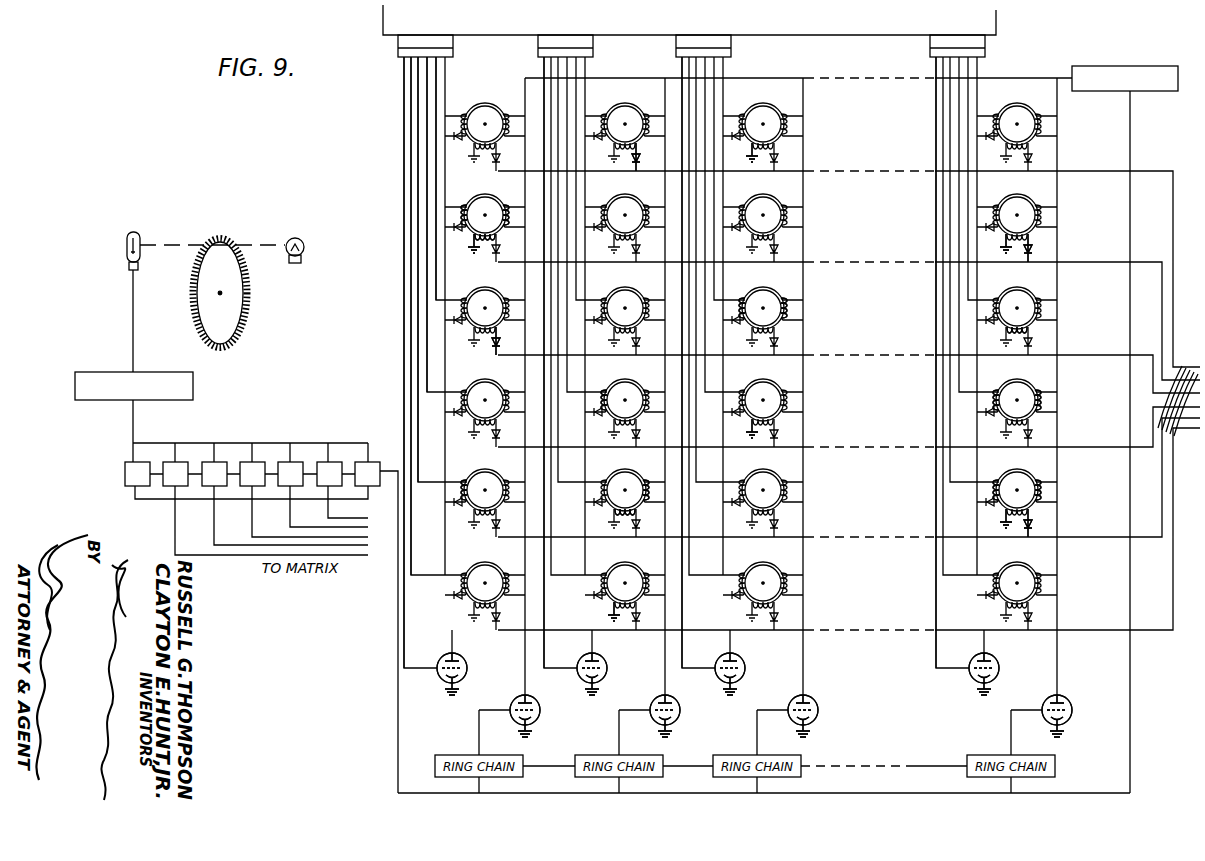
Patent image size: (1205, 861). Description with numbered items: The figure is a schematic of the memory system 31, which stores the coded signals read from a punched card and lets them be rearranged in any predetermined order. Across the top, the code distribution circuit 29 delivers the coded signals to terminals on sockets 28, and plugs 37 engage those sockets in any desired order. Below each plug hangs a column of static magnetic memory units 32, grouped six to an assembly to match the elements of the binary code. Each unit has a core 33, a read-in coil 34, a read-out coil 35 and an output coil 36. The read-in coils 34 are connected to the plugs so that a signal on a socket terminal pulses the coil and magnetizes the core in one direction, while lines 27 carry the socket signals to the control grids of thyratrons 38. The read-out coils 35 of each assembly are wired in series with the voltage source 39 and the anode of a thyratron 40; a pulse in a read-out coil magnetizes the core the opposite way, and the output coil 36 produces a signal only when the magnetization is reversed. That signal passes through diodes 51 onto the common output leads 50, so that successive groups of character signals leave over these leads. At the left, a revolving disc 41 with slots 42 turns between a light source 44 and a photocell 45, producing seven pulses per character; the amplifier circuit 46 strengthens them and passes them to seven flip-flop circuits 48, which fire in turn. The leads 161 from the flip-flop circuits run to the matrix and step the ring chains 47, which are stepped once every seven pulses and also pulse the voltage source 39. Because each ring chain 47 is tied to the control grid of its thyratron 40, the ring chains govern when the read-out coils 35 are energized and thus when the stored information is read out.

The lines 27 is at (404, 366).
The sockets 28 is at (453, 41).
The code distribution circuit 29 is at (689, 20).
The memory system 31 is at (398, 297).
The static magnetic memory units 32 is at (496, 103).
The core 33 is at (492, 188).
The read-in coil 34 is at (467, 205).
The read-out coil 35 is at (504, 205).
The output coil 36 is at (474, 238).
The plugs 37 is at (398, 54).
The thyratrons 38 is at (468, 664).
The voltage source 39 is at (1088, 66).
The thyratrons 40 is at (541, 708).
The revolving disc 41 is at (224, 306).
The slots 42 is at (241, 332).
The light source 44 is at (303, 242).
The photocell 45 is at (126, 245).
The amplifier circuit 46 is at (96, 372).
The ring chains 47 is at (449, 755).
The flip-flop circuits 48 is at (284, 462).
The common output leads 50 is at (808, 171).
The diodes 51 is at (499, 342).
The leads 161 is at (216, 545).